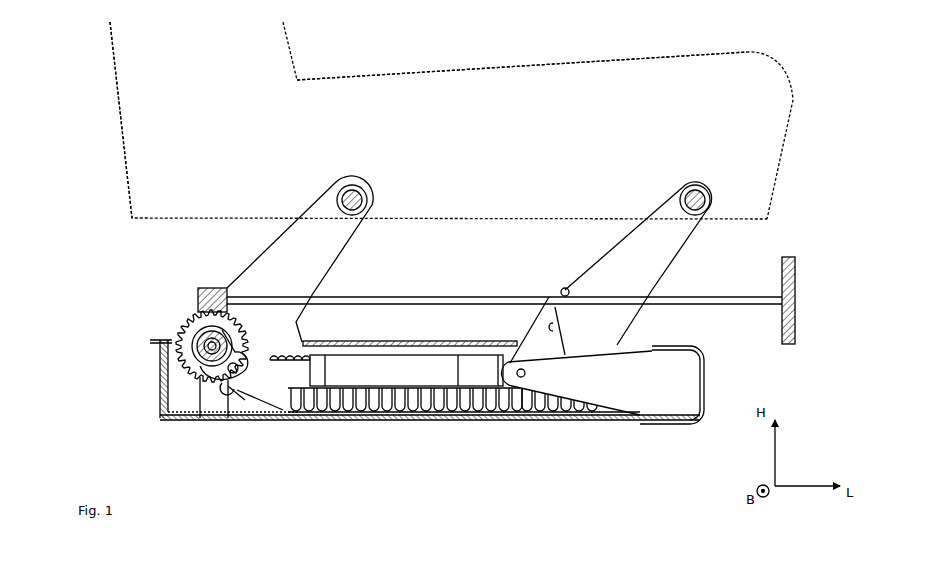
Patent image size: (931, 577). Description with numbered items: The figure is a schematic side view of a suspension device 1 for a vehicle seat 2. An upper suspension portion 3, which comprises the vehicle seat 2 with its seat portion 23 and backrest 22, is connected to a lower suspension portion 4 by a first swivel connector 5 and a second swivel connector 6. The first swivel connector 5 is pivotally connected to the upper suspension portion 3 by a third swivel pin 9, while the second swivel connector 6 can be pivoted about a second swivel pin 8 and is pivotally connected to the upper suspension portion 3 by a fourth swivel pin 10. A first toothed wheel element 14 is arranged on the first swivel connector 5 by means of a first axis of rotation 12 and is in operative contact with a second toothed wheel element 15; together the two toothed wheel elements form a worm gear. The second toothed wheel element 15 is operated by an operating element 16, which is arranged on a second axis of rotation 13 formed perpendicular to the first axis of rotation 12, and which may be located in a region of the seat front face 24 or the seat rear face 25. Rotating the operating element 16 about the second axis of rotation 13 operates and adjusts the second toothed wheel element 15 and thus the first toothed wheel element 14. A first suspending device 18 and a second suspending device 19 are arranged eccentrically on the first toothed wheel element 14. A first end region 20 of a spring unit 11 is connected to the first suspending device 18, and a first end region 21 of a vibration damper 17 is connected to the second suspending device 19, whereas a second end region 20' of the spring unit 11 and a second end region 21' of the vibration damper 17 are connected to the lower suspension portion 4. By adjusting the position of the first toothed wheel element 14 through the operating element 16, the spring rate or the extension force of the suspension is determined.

The suspension device 1 is at (103, 241).
The vehicle seat 2 is at (158, 184).
The upper suspension portion 3 is at (538, 120).
The lower suspension portion 4 is at (688, 425).
The first swivel connector 5 is at (278, 262).
The second swivel connector 6 is at (642, 277).
The second swivel pin 8 is at (562, 291).
The third swivel pin 9 is at (366, 186).
The fourth swivel pin 10 is at (700, 197).
The spring unit 11 is at (386, 414).
The first axis of rotation 12 is at (200, 402).
The second axis of rotation 13 is at (748, 305).
The first toothed wheel element 14 is at (183, 325).
The second toothed wheel element 15 is at (205, 288).
The operating element 16 is at (795, 286).
The vibration damper 17 is at (480, 416).
The first suspending device 18 is at (228, 418).
The second suspending device 19 is at (215, 416).
The first end region of the spring unit 20 is at (245, 441).
The second end region of the spring unit 20' is at (577, 403).
The first end region of the vibration damper 21 is at (387, 341).
The second end region of the vibration damper 21' is at (512, 416).
The backrest 22 is at (138, 41).
The seat portion 23 is at (551, 78).
The seat front face 24 is at (853, 92).
The seat rear face 25 is at (80, 148).